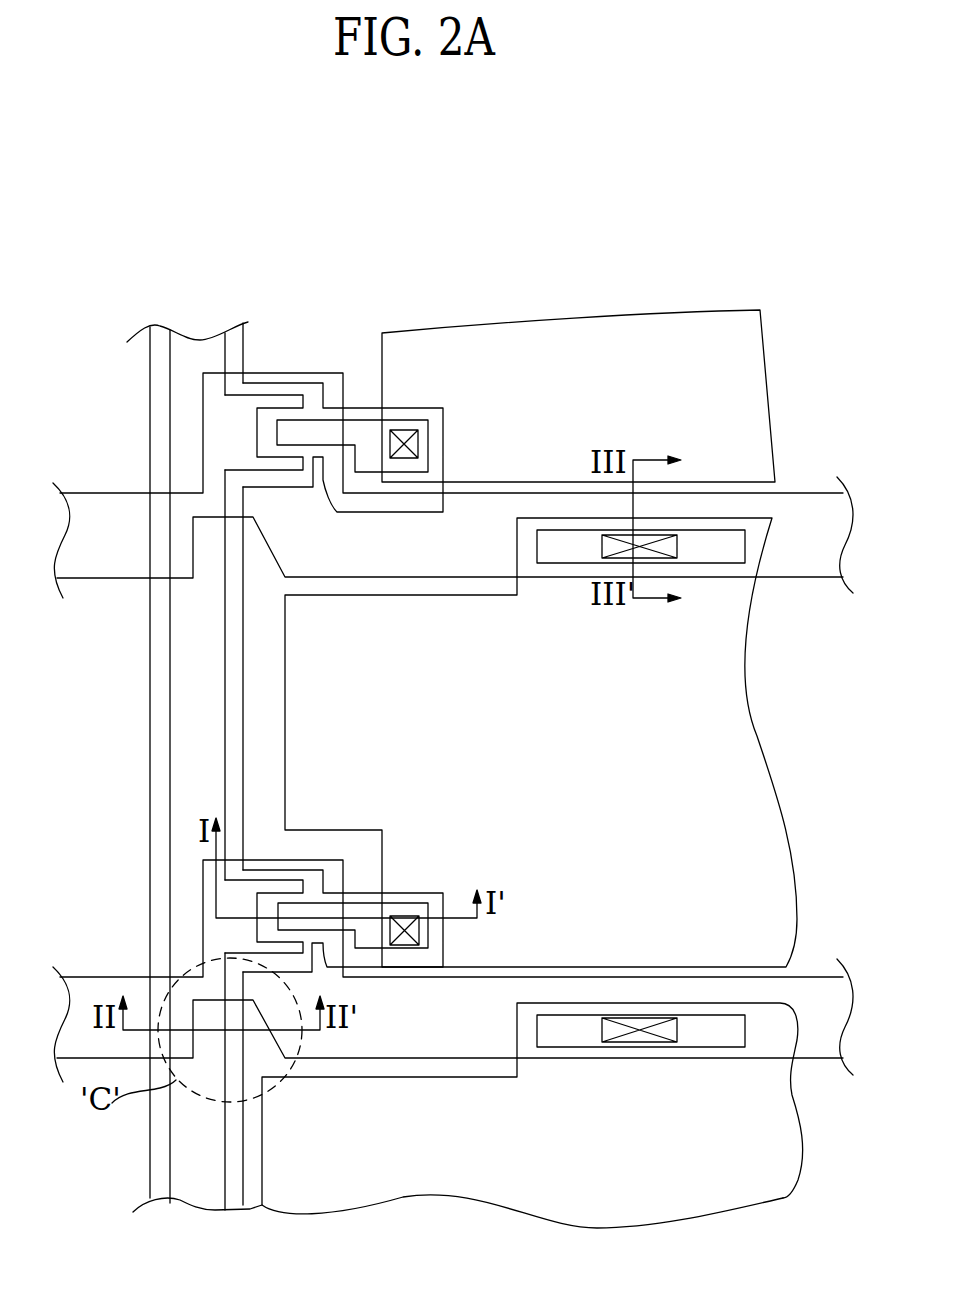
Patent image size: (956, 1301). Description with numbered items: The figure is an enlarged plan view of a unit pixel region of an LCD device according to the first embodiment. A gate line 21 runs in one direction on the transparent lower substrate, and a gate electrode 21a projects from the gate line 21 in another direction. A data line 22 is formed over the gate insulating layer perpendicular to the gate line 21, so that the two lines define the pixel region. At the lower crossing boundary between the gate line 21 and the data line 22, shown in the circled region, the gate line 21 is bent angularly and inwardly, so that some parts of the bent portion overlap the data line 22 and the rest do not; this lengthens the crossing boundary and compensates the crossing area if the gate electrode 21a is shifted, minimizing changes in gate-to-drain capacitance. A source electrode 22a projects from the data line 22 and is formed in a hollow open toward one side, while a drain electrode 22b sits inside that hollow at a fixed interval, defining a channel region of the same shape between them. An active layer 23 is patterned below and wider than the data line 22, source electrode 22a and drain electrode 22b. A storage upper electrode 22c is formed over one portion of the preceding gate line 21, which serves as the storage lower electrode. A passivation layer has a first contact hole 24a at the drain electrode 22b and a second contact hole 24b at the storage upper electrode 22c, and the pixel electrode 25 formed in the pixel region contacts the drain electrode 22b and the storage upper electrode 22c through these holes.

The gate line 21 is at (350, 1062).
The gate electrode 21a is at (203, 905).
The data line 22 is at (227, 737).
The source electrode 22a is at (287, 884).
The drain electrode 22b is at (421, 926).
The storage upper electrode 22c is at (560, 553).
The active layer 23 is at (155, 655).
The first contact hole 24a is at (420, 922).
The second contact hole 24b is at (647, 553).
The pixel electrode 25 is at (780, 801).